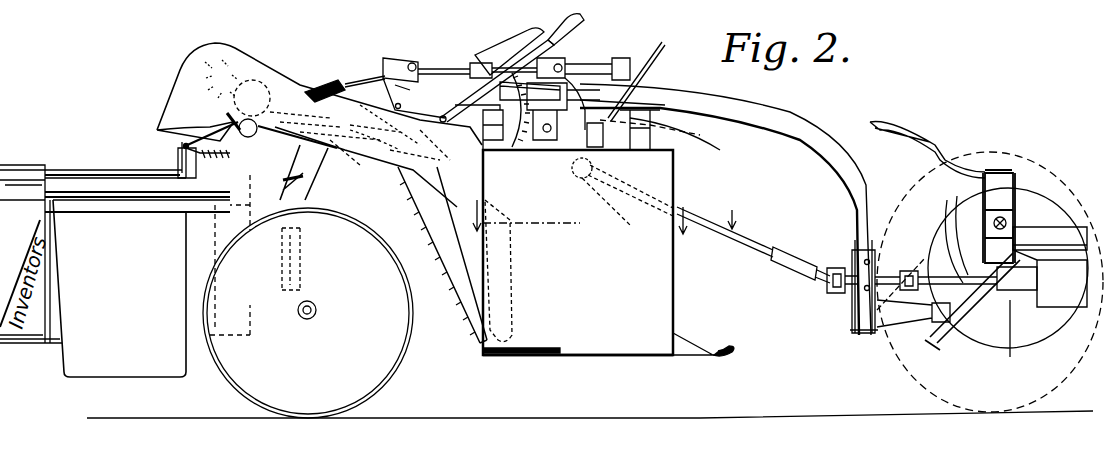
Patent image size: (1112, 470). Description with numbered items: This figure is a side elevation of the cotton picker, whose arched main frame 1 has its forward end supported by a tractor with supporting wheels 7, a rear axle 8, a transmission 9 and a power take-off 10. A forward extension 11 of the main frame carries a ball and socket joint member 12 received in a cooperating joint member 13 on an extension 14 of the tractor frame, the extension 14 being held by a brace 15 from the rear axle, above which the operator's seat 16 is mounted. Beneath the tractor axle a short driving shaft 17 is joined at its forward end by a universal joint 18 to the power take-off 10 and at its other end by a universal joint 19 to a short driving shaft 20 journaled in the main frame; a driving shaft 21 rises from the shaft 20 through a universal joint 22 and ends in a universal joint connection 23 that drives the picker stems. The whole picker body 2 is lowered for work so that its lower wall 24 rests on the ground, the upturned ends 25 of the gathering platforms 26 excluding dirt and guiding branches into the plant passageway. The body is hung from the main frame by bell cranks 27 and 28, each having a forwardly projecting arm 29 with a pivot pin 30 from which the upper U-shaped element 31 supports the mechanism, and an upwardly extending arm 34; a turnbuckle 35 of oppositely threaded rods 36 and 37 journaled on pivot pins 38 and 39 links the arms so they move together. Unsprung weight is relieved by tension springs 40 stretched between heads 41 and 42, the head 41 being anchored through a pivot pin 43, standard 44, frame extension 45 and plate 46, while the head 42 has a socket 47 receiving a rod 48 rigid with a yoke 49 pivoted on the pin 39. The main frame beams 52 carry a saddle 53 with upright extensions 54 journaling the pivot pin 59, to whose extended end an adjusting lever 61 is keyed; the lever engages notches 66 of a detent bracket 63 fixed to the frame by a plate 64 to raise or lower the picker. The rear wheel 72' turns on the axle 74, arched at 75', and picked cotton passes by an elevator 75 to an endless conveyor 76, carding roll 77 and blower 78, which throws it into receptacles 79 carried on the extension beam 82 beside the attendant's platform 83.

The main frame 1 is at (690, 88).
The picker mechanism body 2 is at (673, 193).
The supporting wheels 7 is at (1008, 152).
The rear axle 8 is at (1018, 222).
The transmission 9 is at (1080, 305).
The power take-off 10 is at (1040, 330).
The forward extension 11 is at (870, 334).
The ball and socket joint member 12 is at (905, 335).
The cooperating joint member 13 is at (1010, 267).
The extension 14 is at (940, 355).
The brace 15 is at (948, 245).
The seat 16 is at (887, 135).
The short driving shaft 17 is at (918, 270).
The universal joint 18 is at (1010, 292).
The universal joint 19 is at (900, 262).
The short driving shaft 20 is at (862, 255).
The driving shaft 21 is at (760, 245).
The universal joint 22 is at (836, 294).
The universal joint connection 23 is at (610, 205).
The lower wall 24 is at (673, 357).
The upturned ends 25 is at (732, 358).
The gathering platforms 26 is at (705, 348).
The bell crank 27 is at (605, 152).
The bell crank 28 is at (415, 136).
The forwardly projecting arm 29 is at (652, 70).
The pivot pin 30 is at (680, 130).
The upper U-shaped element 31 is at (657, 136).
The upwardly extending arm 34 is at (509, 51).
The turnbuckle 35 is at (515, 40).
The screw-threaded rod 36 is at (575, 44).
The screw-threaded rod 37 is at (440, 60).
The pivot pin 38 is at (580, 80).
The pivot pin 39 is at (405, 59).
The tension springs 40 is at (318, 90).
The head 41 is at (145, 200).
The head 42 is at (342, 78).
The pivot pin 43 is at (178, 148).
The standard 44 is at (178, 160).
The frame extension 45 is at (337, 200).
The plate 46 is at (290, 163).
The socket 47 is at (335, 106).
The rod 48 is at (361, 84).
The yoke 49 is at (388, 58).
The hollow metal beam 52 is at (690, 142).
The saddle 53 is at (360, 136).
The upright extensions 54 is at (565, 100).
The pivot pin 59 is at (548, 130).
The adjusting lever 61 is at (590, 56).
The detent bracket 63 is at (506, 152).
The plate 64 is at (565, 22).
The notches 66 is at (540, 140).
The wheel 72' is at (324, 313).
The axle 74 is at (316, 310).
The elevator 75 is at (442, 256).
The upwardly arched portion 75' is at (324, 259).
The endless conveyor 76 is at (165, 130).
The carding roll 77 is at (233, 108).
The combined blower and ejector 78 is at (200, 73).
The receptacles 79 is at (141, 288).
The hollow beam 82 is at (205, 183).
The platform 83 is at (30, 345).